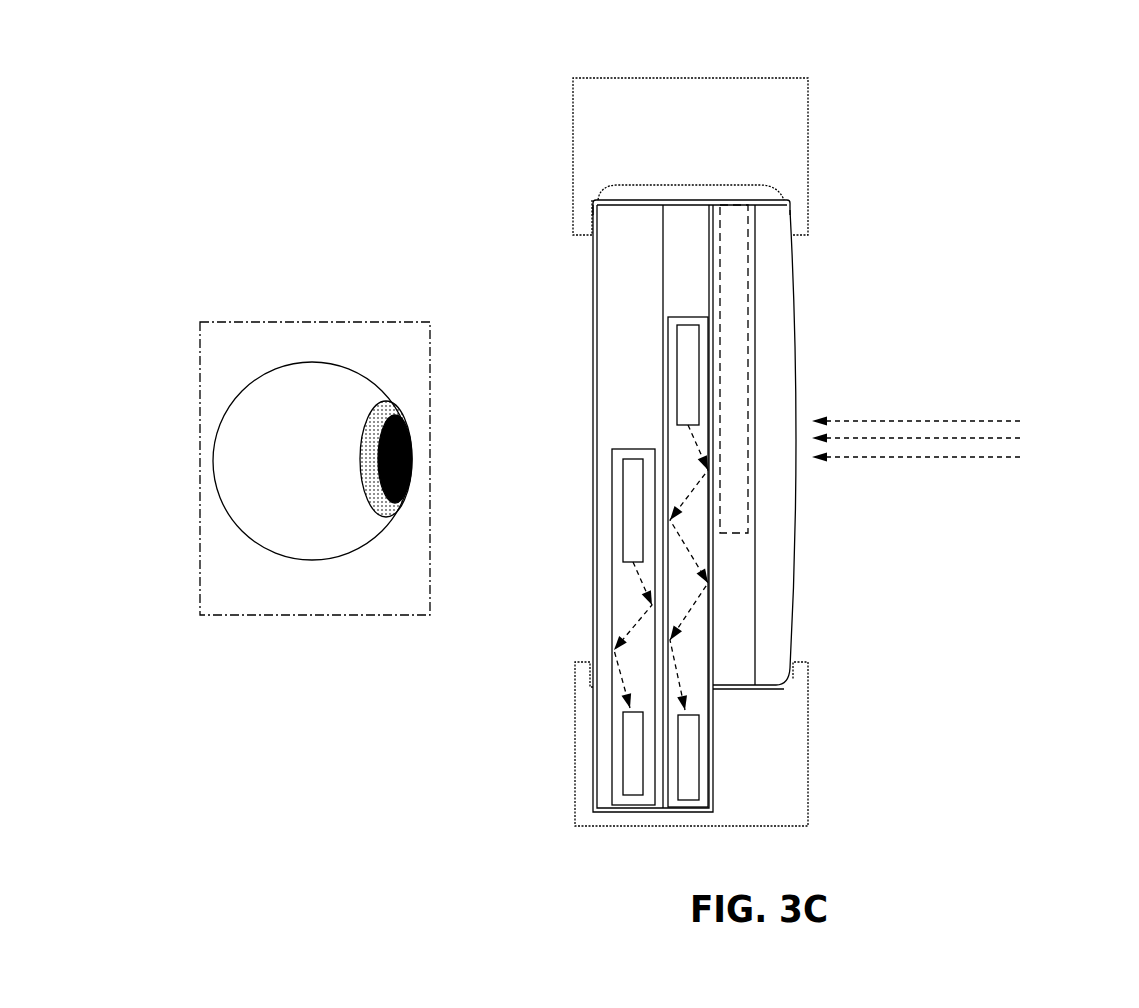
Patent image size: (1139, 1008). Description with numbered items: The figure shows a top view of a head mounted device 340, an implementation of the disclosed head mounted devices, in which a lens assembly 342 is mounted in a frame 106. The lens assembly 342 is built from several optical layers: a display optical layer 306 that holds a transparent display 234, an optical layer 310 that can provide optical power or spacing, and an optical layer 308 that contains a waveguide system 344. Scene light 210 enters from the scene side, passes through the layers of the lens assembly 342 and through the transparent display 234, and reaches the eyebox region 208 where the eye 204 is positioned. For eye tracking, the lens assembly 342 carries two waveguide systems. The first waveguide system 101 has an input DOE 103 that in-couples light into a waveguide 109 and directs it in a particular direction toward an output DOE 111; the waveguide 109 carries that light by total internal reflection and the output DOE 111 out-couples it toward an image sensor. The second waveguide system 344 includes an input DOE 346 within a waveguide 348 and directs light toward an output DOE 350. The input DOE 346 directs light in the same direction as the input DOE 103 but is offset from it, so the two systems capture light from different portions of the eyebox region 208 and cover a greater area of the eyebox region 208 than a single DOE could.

The head mounted device 340 is at (776, 26).
The frame 106 is at (757, 112).
The lens assembly 342 is at (635, 185).
The optical layer 308 is at (681, 270).
The waveguide system 344 is at (679, 303).
The input DOE 346 is at (683, 380).
The waveguide 348 is at (678, 440).
The output DOE 350 is at (690, 765).
The waveguide system 101 is at (612, 435).
The input DOE 103 is at (632, 490).
The waveguide 109 is at (622, 608).
The output DOE 111 is at (632, 772).
The display 234 is at (740, 262).
The display optical layer 306 is at (737, 612).
The optical layer 310 is at (783, 535).
The eye 204 is at (300, 459).
The eyebox region 208 is at (308, 613).
The scene light 210 is at (968, 436).